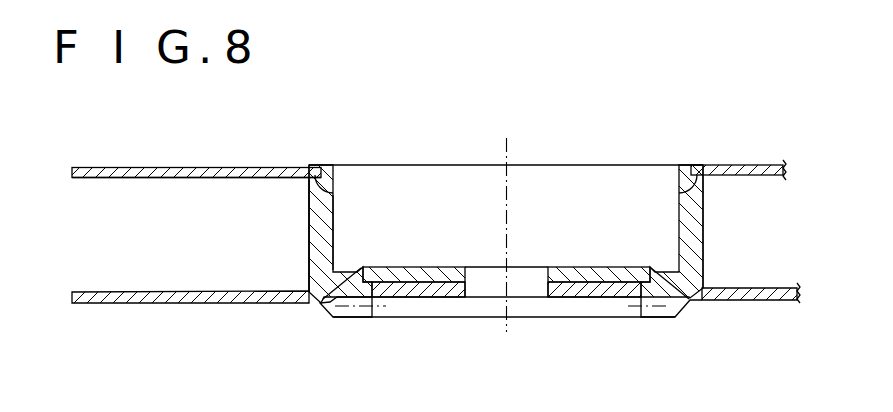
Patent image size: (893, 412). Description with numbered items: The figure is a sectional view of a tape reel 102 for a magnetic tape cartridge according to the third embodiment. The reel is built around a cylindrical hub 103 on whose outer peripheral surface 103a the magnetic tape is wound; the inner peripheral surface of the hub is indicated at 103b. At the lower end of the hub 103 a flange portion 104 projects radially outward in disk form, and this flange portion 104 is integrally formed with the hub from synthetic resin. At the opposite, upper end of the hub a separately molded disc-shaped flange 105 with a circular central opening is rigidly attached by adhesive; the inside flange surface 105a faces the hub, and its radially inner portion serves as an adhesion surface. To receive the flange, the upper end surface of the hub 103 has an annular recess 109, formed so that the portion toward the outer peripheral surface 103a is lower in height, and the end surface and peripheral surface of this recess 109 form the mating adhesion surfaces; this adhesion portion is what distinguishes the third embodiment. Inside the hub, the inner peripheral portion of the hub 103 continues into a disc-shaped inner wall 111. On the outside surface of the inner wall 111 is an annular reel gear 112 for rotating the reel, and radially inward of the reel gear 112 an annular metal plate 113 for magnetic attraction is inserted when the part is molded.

The tape reel 102 is at (265, 118).
The cylindrical hub 103 is at (320, 248).
The outer peripheral surface 103a is at (308, 210).
The inner wall surface of housing 103b is at (334, 218).
The flange portion 104 is at (183, 292).
The flange 105 is at (153, 167).
The inside flange surface 105a is at (203, 178).
The annular recess 109 is at (333, 193).
The inner wall 111 is at (443, 270).
The reel gear 112 is at (659, 318).
The metal plate 113 is at (566, 298).